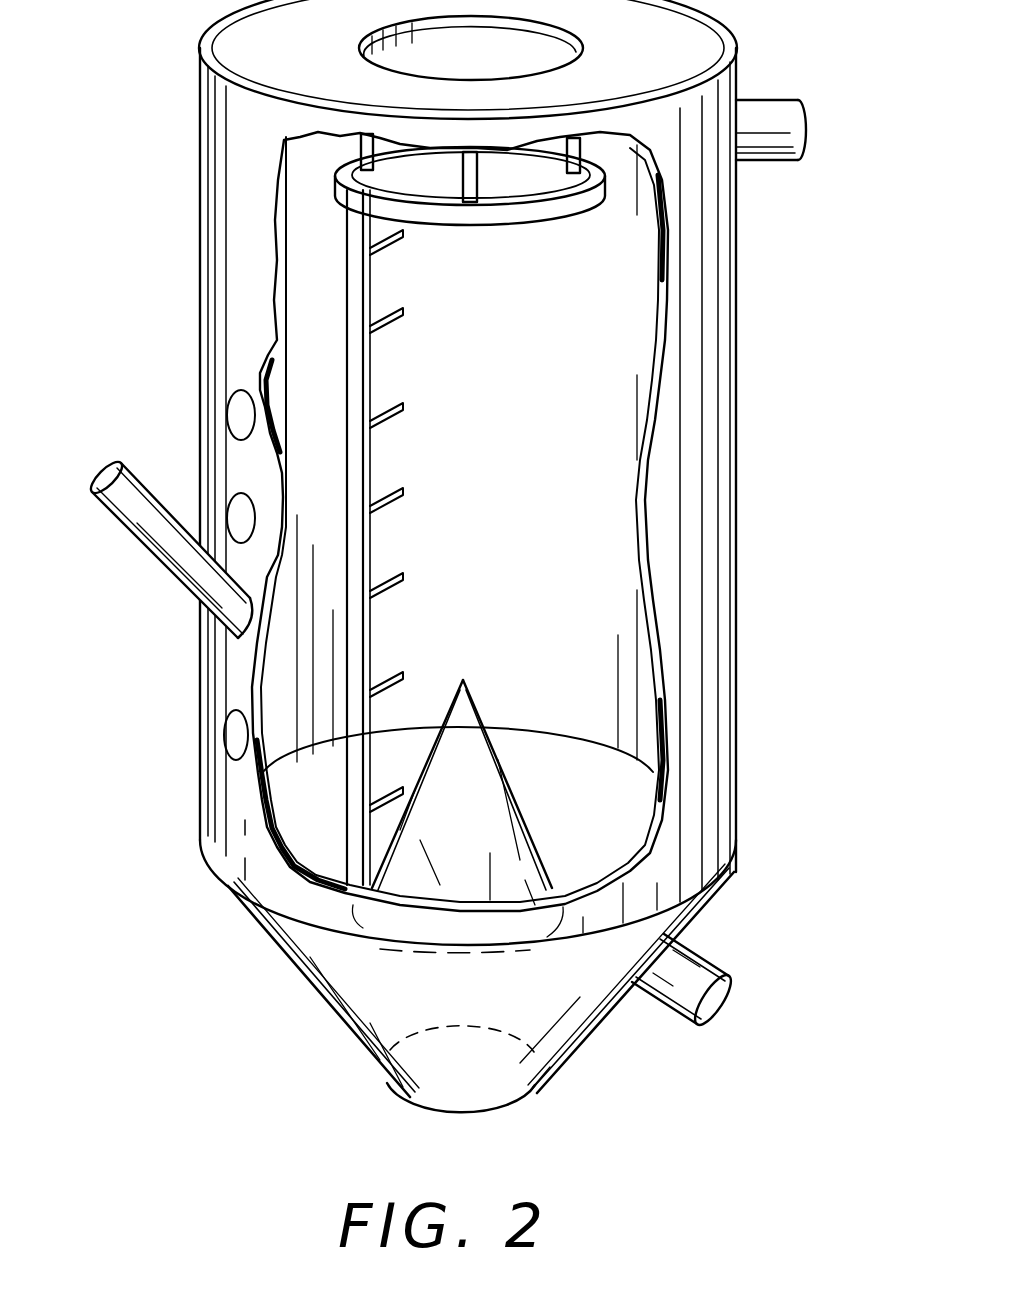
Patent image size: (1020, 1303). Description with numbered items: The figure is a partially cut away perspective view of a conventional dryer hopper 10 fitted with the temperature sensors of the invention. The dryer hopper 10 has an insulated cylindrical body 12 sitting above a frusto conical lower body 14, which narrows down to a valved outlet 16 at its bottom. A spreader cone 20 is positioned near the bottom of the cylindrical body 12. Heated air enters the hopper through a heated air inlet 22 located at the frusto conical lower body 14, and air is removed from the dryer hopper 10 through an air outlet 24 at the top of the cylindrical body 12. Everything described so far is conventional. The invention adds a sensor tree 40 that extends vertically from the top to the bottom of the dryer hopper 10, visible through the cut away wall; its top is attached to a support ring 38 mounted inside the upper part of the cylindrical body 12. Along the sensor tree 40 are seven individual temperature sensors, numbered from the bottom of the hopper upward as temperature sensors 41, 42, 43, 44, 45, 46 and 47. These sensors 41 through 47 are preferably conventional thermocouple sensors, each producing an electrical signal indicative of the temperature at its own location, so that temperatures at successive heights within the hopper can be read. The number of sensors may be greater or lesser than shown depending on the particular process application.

The dryer hopper 10 is at (517, 476).
The insulated cylindrical body 12 is at (519, 499).
The frusto conical lower body 14 is at (340, 1037).
The valved outlet 16 is at (475, 1107).
The spreader cone 20 is at (468, 770).
The heated air inlet 22 is at (727, 1003).
The air outlet 24 is at (776, 108).
The support ring 38 is at (553, 205).
The sensor tree 40 is at (350, 277).
The temperature sensor 41 is at (388, 798).
The temperature sensor 42 is at (383, 675).
The temperature sensor 43 is at (384, 574).
The temperature sensor 44 is at (384, 488).
The temperature sensor 45 is at (388, 404).
The temperature sensor 46 is at (401, 314).
The temperature sensor 47 is at (401, 238).